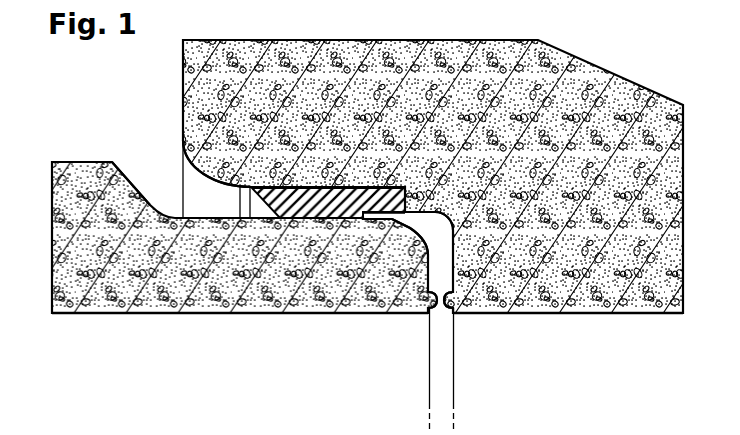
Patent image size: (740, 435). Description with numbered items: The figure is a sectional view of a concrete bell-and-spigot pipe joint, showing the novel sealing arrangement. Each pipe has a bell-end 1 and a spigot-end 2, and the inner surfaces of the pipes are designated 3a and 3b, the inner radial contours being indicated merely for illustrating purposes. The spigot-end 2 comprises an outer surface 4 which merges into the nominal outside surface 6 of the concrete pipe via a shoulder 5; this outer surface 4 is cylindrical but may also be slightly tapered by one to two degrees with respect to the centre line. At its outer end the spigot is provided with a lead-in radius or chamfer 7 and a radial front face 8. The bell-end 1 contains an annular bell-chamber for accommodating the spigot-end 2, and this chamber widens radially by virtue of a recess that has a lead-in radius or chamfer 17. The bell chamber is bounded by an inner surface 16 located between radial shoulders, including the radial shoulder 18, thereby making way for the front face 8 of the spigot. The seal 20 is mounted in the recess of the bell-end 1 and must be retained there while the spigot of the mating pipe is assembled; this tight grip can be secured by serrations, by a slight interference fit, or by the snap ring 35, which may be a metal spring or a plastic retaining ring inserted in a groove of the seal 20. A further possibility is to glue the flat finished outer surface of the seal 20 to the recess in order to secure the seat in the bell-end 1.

The bell-end 1 is at (240, 58).
The spigot-end 2 is at (304, 314).
The inner surface 3a is at (575, 314).
The inner surface 3b is at (234, 314).
The outer surface 4 is at (210, 217).
The shoulder 5 is at (118, 162).
The top surface 6 is at (78, 162).
The lead-in radius or chamfer 7 is at (415, 213).
The radial front face 8 is at (430, 300).
The inner surface 16 is at (440, 222).
The lead-in radius or chamfer 17 is at (184, 172).
The radial shoulder 18 is at (452, 300).
The seal 20 is at (336, 187).
The snap ring 35 is at (256, 197).